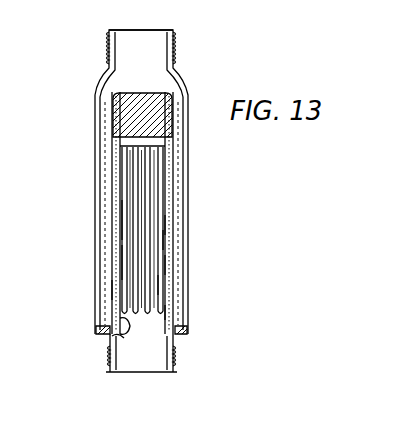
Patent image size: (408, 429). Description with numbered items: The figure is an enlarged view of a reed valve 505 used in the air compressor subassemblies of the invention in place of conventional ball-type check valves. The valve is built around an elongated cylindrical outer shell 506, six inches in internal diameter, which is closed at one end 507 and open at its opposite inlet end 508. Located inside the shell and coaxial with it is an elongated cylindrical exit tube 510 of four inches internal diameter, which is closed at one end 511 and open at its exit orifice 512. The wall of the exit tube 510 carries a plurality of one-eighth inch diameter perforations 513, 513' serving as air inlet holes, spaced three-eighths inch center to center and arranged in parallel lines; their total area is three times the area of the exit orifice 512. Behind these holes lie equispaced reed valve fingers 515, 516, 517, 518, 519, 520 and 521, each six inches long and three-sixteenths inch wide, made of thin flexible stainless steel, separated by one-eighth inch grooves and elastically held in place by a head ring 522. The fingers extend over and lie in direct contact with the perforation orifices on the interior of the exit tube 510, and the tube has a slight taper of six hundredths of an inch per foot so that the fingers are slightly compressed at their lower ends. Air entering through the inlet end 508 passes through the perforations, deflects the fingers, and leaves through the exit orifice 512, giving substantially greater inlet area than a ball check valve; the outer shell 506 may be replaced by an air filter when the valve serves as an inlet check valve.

The reed valve 505 is at (93, 91).
The open inlet end 508 is at (147, 35).
The closed end of exit tube 511 is at (165, 93).
The head ring 522 is at (148, 147).
The outer shell 506 is at (186, 176).
The perforation 513 is at (181, 230).
The perforation 513' is at (79, 262).
The reed valve finger 515 is at (172, 225).
The exit tube 510 is at (170, 240).
The reed valve finger 516 is at (170, 263).
The reed valve finger 517 is at (160, 284).
The reed valve finger 518 is at (170, 311).
The reed valve finger 521 is at (112, 286).
The closed end of outer shell 507 is at (108, 329).
The exit orifice 512 is at (148, 373).
The reed valve finger 520 is at (112, 340).
The reed valve finger 519 is at (135, 316).